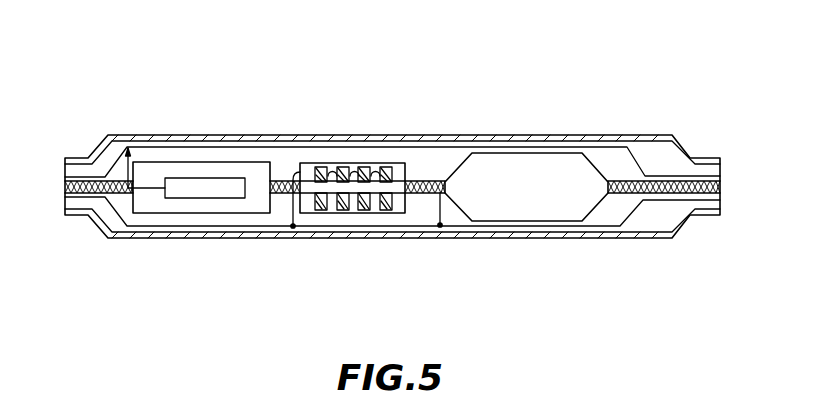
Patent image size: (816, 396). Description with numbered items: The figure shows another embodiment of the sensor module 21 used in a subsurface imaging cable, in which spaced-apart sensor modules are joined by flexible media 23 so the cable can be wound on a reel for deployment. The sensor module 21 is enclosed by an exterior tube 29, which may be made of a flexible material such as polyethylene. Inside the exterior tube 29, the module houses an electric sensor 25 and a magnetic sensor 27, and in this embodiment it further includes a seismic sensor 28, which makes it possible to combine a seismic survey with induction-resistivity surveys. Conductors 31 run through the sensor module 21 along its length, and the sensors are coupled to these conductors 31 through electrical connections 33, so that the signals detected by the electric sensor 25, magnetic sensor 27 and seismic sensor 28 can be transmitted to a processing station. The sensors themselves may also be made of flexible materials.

The sensor module 21 is at (433, 106).
The flexible media 23 is at (627, 195).
The electric sensor 25 is at (163, 207).
The magnetic sensor 27 is at (356, 218).
The seismic sensor 28 is at (518, 207).
The exterior tube 29 is at (621, 133).
The conductors 31 is at (345, 147).
The electrical connections 33 is at (292, 212).